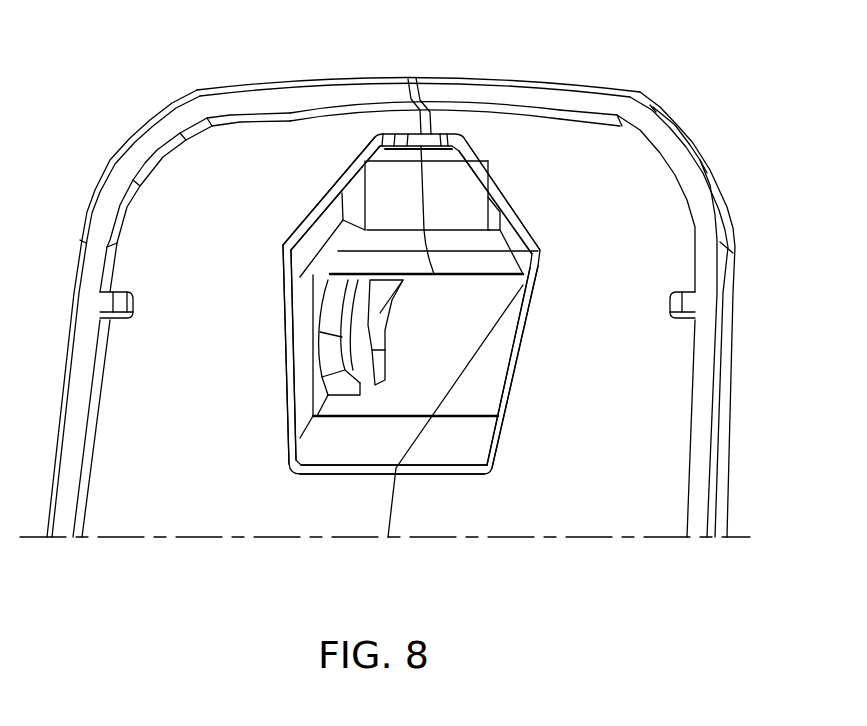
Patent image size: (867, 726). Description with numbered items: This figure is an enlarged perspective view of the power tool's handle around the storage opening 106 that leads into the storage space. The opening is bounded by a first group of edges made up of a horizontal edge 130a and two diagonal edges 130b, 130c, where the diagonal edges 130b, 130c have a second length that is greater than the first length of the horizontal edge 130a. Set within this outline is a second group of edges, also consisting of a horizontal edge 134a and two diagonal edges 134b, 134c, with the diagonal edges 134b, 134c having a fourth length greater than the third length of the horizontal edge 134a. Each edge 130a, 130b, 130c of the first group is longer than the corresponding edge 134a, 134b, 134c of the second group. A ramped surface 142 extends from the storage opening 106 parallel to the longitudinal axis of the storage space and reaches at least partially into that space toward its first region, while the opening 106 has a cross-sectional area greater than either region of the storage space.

The storage opening 106 is at (280, 293).
The horizontal edge 130a is at (423, 462).
The diagonal edge 130b is at (283, 352).
The diagonal edge 130c is at (522, 358).
The horizontal edge 134a is at (415, 78).
The diagonal edge 134b is at (335, 192).
The diagonal edge 134c is at (493, 190).
The ramped surface 142 is at (330, 436).